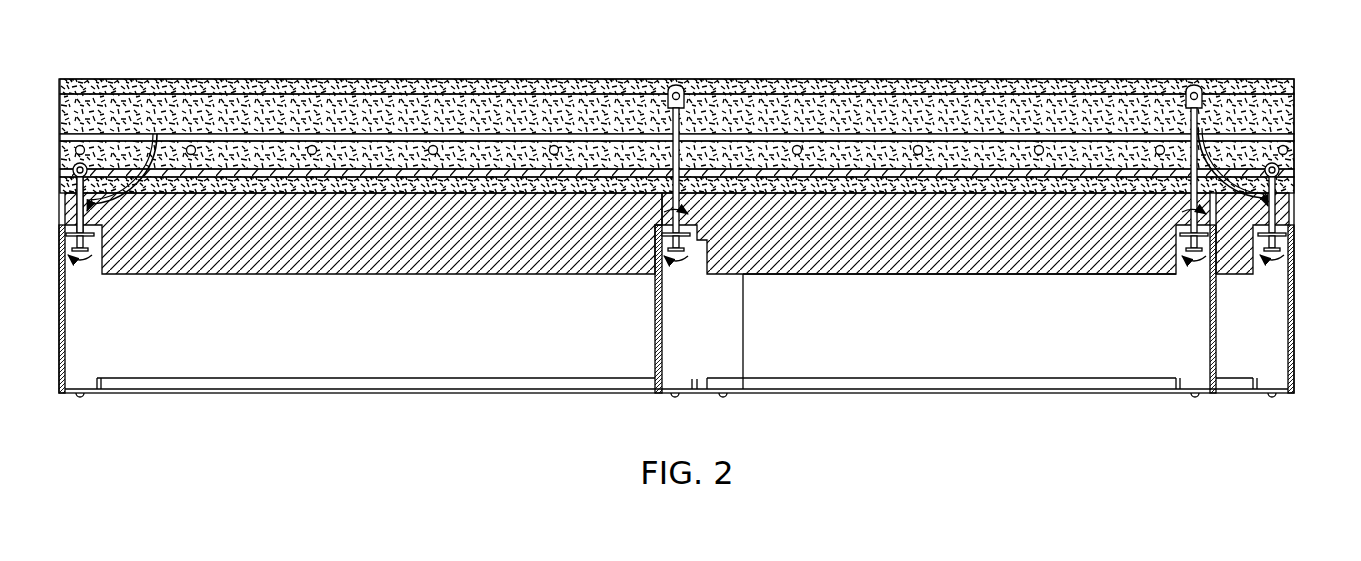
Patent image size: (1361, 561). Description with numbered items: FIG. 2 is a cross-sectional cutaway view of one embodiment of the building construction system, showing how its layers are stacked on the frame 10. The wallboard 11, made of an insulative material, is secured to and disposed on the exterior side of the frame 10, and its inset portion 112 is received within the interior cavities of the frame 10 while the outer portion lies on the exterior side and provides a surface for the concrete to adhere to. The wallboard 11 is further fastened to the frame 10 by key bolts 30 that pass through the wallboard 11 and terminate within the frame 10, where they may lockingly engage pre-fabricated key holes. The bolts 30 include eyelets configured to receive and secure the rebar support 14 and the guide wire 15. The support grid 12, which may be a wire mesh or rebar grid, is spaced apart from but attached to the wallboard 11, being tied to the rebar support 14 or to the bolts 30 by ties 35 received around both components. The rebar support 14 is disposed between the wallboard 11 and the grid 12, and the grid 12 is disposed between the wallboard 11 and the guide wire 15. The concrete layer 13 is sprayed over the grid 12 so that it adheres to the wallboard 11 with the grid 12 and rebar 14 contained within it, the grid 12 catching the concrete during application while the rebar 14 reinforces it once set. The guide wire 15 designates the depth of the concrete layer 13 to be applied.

The frame 10 is at (1278, 326).
The wallboard 11 is at (1293, 211).
The inset portion 112 is at (957, 277).
The support grid 12 is at (1278, 137).
The concrete layer 13 is at (1288, 120).
The rebar support 14 is at (404, 166).
The guide wire 15 is at (1264, 88).
The key bolt 30 is at (86, 277).
The tie 35 is at (157, 134).